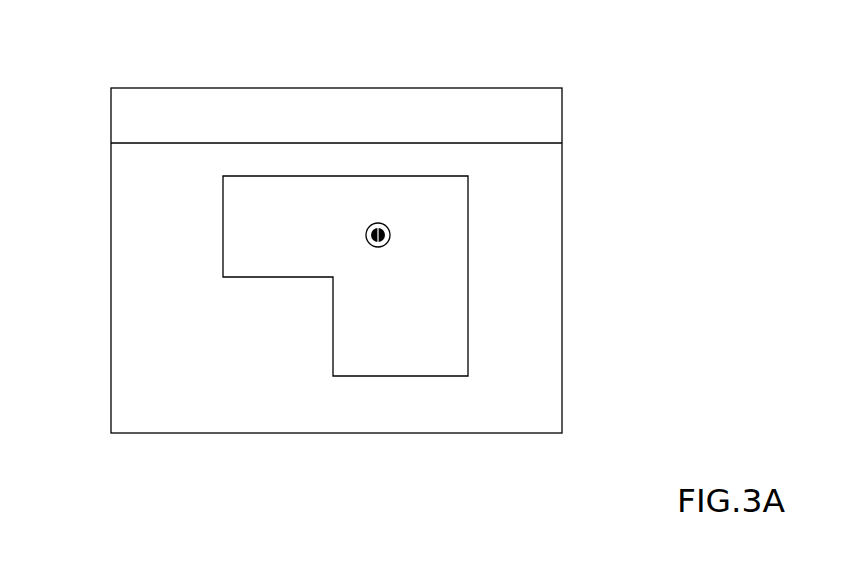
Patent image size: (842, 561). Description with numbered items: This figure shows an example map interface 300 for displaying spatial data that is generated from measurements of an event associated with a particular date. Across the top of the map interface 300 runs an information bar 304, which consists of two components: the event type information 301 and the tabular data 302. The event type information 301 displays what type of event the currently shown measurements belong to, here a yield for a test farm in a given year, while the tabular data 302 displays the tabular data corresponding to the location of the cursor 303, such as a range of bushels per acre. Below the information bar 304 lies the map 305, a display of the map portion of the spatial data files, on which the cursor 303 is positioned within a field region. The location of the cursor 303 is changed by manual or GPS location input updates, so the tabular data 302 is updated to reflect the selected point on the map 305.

The map interface 300 is at (108, 296).
The event type information 301 is at (414, 64).
The tabular data 302 is at (451, 127).
The cursor 303 is at (390, 234).
The information bar 304 is at (158, 115).
The map 305 is at (406, 346).